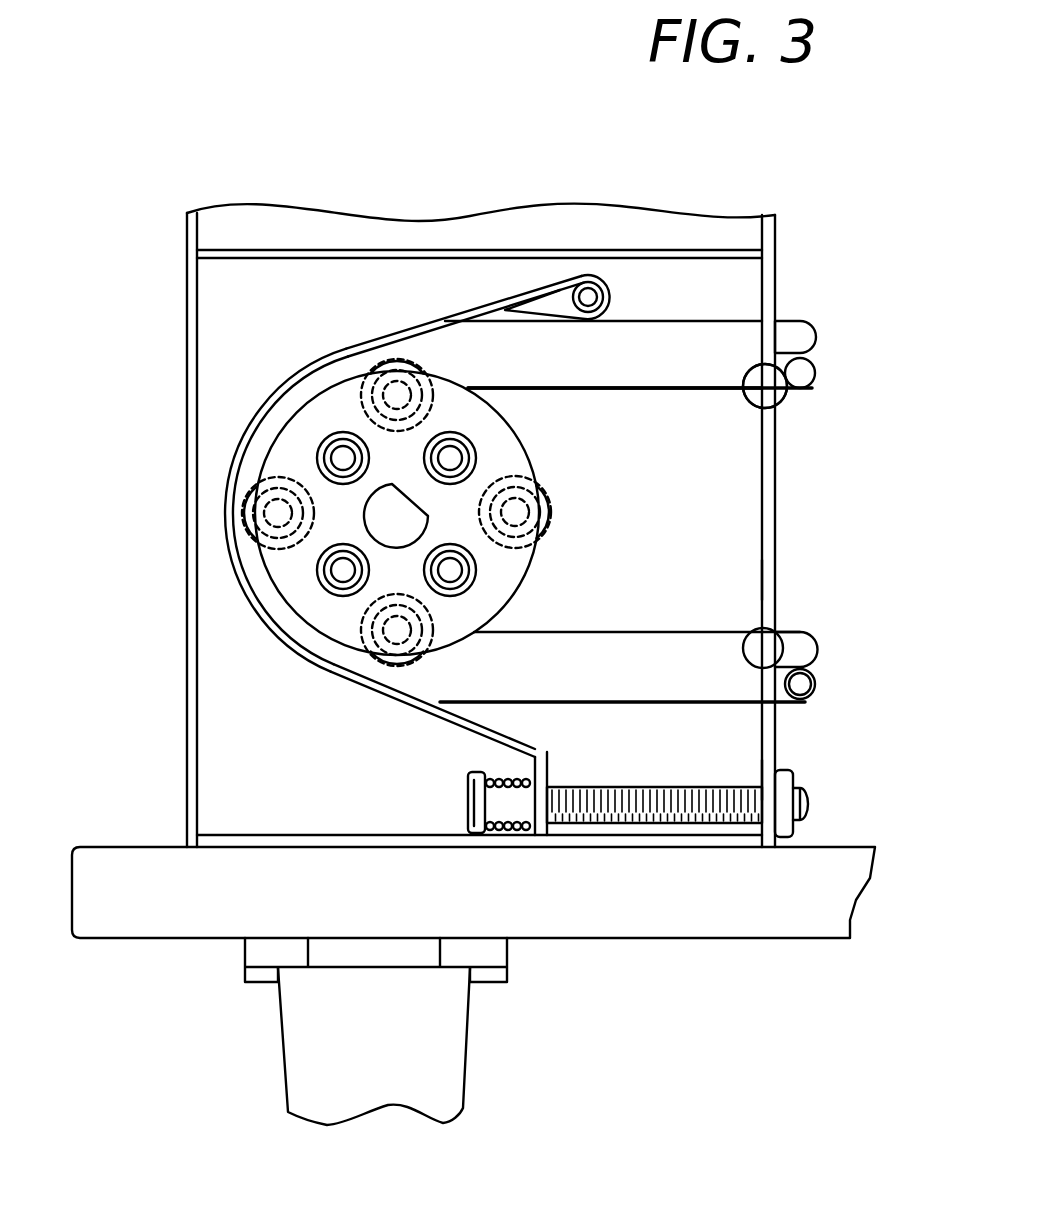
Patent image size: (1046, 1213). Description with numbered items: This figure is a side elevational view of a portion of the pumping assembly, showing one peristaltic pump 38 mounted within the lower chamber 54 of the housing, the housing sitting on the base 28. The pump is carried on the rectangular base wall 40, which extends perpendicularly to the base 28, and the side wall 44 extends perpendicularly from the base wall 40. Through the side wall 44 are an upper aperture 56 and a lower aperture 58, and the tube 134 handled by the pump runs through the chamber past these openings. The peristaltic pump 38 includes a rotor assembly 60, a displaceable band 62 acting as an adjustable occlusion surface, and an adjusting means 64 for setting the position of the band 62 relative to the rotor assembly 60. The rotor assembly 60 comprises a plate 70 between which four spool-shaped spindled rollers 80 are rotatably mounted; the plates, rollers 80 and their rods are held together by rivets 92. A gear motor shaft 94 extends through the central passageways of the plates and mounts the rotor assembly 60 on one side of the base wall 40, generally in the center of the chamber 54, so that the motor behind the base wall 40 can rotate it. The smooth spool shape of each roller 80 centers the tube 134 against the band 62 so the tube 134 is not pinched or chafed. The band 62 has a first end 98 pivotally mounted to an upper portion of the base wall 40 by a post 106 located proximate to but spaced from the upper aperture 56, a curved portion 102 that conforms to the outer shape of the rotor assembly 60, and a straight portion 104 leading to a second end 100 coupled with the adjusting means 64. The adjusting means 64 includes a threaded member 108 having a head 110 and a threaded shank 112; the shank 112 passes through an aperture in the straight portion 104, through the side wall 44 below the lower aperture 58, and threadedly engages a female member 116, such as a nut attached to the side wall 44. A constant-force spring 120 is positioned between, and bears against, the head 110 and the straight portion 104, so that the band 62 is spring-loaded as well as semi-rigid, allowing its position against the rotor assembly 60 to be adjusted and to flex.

The base 28 is at (618, 906).
The peristaltic pump 38 is at (786, 500).
The base wall 40 is at (736, 450).
The side wall 44 is at (776, 576).
The lower chamber 54 is at (238, 318).
The upper aperture 56 is at (752, 352).
The lower aperture 58 is at (760, 625).
The rotor assembly 60 is at (640, 548).
The band 62 is at (302, 665).
The adjusting means 64 is at (726, 772).
The plate 70 is at (485, 600).
The roller 80 is at (397, 372).
The rivet 92 is at (450, 458).
The gear motor shaft 94 is at (375, 513).
The first end 98 is at (585, 292).
The second end 100 is at (546, 757).
The curved portion 102 is at (222, 555).
The straight portion 104 is at (548, 772).
The post 106 is at (595, 297).
The threaded member 108 is at (468, 763).
The head 110 is at (468, 806).
The threaded shank 112 is at (640, 826).
The female member 116 is at (790, 770).
The spring 120 is at (505, 832).
The tube 134 is at (713, 345).